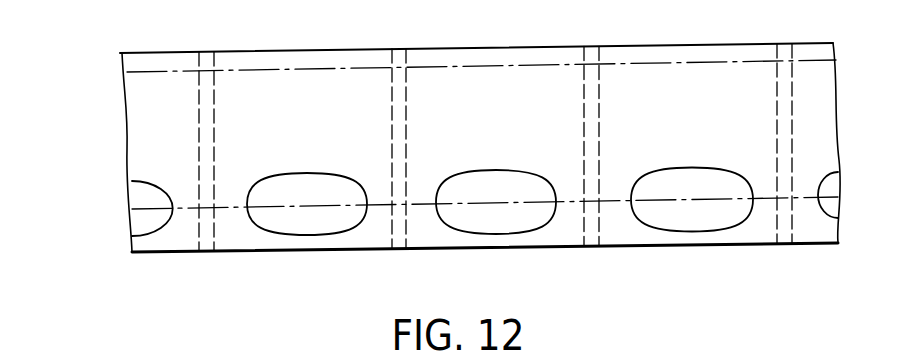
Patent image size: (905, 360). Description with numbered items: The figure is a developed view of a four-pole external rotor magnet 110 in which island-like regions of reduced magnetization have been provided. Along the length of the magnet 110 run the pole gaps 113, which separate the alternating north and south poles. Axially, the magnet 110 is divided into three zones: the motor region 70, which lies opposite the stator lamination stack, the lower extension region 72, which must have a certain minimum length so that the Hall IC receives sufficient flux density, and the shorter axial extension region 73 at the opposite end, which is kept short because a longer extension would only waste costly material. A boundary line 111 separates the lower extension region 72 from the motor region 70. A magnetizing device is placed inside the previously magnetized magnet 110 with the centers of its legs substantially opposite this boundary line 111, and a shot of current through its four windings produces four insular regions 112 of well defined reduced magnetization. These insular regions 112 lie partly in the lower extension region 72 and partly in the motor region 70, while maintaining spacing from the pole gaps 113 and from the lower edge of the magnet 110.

The rotor magnet 110 is at (493, 58).
The boundary line 111 is at (233, 206).
The insular regions 112 is at (148, 232).
The pole gaps 113 is at (214, 136).
The motor region 70 is at (112, 205).
The lower extension region 72 is at (111, 212).
The axial extension region 73 is at (110, 55).